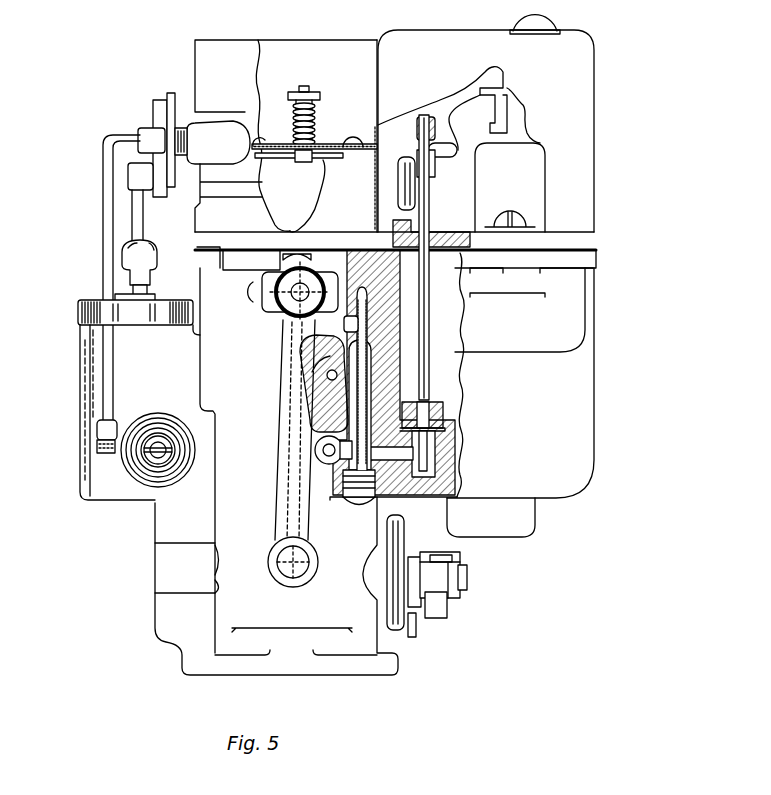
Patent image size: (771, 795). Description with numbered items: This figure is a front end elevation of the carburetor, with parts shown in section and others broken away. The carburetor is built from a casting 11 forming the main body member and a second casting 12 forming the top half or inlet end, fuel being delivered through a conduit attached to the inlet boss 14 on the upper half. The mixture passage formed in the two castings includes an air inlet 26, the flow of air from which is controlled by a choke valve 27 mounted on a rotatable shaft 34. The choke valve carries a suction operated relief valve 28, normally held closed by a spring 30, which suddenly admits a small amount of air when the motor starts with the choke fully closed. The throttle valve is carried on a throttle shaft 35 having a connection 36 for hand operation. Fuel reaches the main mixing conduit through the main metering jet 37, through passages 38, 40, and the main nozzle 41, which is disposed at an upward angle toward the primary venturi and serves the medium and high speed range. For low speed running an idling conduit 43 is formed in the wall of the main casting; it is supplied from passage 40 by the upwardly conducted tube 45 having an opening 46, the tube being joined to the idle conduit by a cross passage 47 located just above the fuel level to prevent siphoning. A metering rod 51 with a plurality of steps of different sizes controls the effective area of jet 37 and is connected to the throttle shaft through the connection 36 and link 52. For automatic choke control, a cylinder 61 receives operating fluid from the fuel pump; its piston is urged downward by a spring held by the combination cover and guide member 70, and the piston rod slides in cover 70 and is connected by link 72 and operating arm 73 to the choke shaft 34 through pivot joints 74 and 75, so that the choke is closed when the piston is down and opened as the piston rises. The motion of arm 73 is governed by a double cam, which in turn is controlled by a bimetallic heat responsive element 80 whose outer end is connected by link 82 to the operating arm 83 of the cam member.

The casting forming the main body member 11 is at (590, 352).
The second casting 12 is at (594, 160).
The inlet boss 14 is at (527, 160).
The air inlet 26 is at (340, 62).
The choke valve 27 is at (338, 145).
The suction operated relief valve 28 is at (293, 160).
The spring 30 is at (295, 120).
The rotatable shaft 34 is at (333, 156).
The throttle shaft 35 is at (467, 578).
The connection 36 is at (437, 610).
The main metering jet 37 is at (421, 411).
The passage 38 is at (430, 452).
The passage 40 is at (398, 455).
The main nozzle 41 is at (310, 375).
The idling conduit 43 is at (292, 478).
The upwardly conducted tube 45 is at (366, 372).
The opening 46 is at (359, 412).
The cross passage 47 is at (330, 285).
The metering rod 51 is at (427, 310).
The link 52 is at (402, 176).
The cylinder 61 is at (85, 350).
The combination cover and guide member 70 is at (80, 311).
The link 72 is at (131, 213).
The operating arm 73 is at (158, 125).
The ball and socket or pivot joint 74 is at (122, 262).
The ball and socket or pivot joint 75 is at (129, 179).
The thermostat or heat responsive element 80 is at (122, 463).
The link 82 is at (104, 233).
The operating arm of the double cam member 83 is at (168, 95).